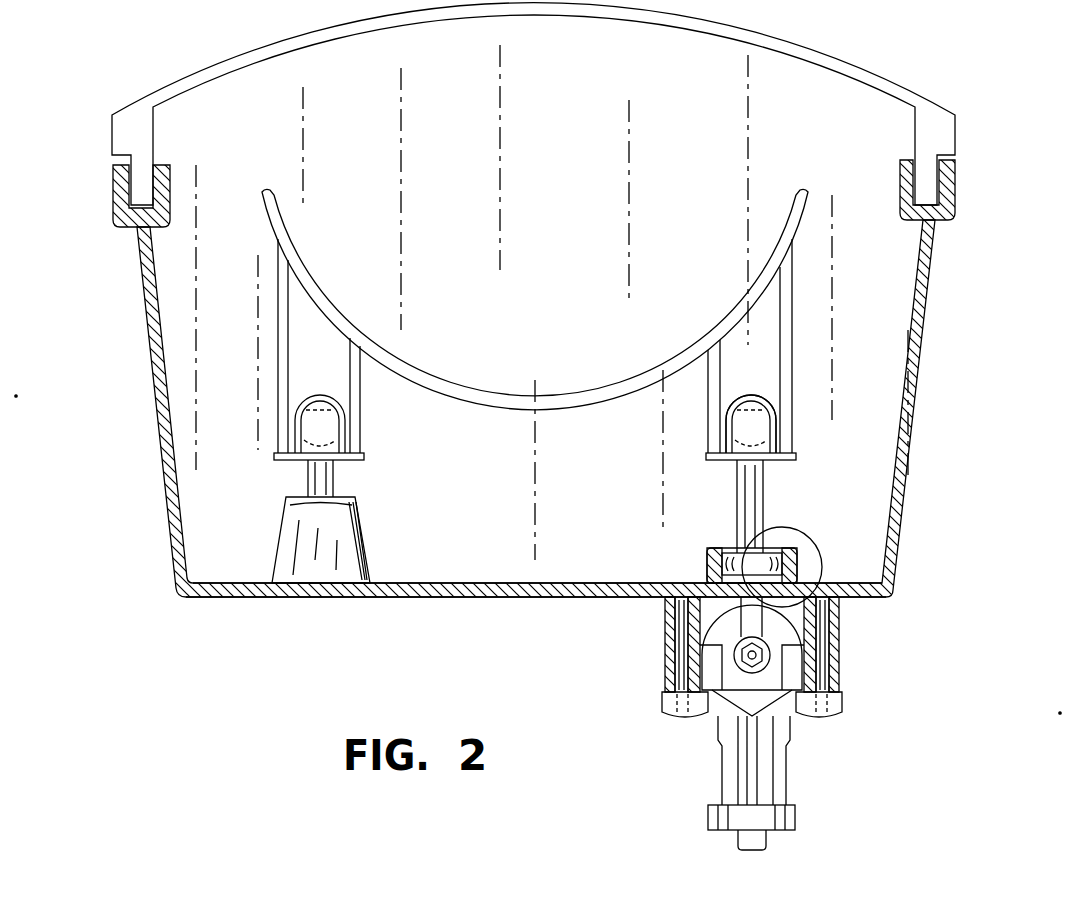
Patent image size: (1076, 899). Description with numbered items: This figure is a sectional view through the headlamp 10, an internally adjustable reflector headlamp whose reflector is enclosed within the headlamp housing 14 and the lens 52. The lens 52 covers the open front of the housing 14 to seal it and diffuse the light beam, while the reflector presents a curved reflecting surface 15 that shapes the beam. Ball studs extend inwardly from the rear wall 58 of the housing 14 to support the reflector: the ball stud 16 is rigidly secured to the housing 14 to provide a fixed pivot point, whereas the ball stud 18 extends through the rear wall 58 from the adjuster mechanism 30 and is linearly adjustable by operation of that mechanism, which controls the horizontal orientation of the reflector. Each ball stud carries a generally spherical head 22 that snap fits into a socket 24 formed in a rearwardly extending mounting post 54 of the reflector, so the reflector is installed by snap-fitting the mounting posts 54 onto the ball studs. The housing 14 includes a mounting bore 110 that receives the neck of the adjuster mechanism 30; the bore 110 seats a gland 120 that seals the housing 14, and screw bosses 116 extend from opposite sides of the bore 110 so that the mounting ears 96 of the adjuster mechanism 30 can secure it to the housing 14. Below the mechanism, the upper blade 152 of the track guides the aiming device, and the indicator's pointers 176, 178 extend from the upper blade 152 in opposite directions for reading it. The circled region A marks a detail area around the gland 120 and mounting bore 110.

The headlamp 10 is at (1044, 120).
The headlamp housing 14 is at (152, 393).
The curved reflecting surface 15 is at (480, 400).
The ball stud 16 is at (307, 478).
The ball stud 18 is at (737, 488).
The spherical head 22 is at (762, 428).
The socket 24 is at (341, 452).
The adjuster mechanism 30 is at (834, 748).
The lens 52 is at (840, 62).
The mounting post 54 is at (366, 400).
The rear wall 58 is at (453, 582).
The mounting ear 96 is at (662, 700).
The mounting bore 110 is at (795, 562).
The screw boss 116 is at (670, 666).
The gland 120 is at (760, 550).
The upper blade 152 is at (735, 765).
The pointer 176 is at (708, 665).
The pointer 178 is at (792, 662).
The detail area A is at (823, 563).